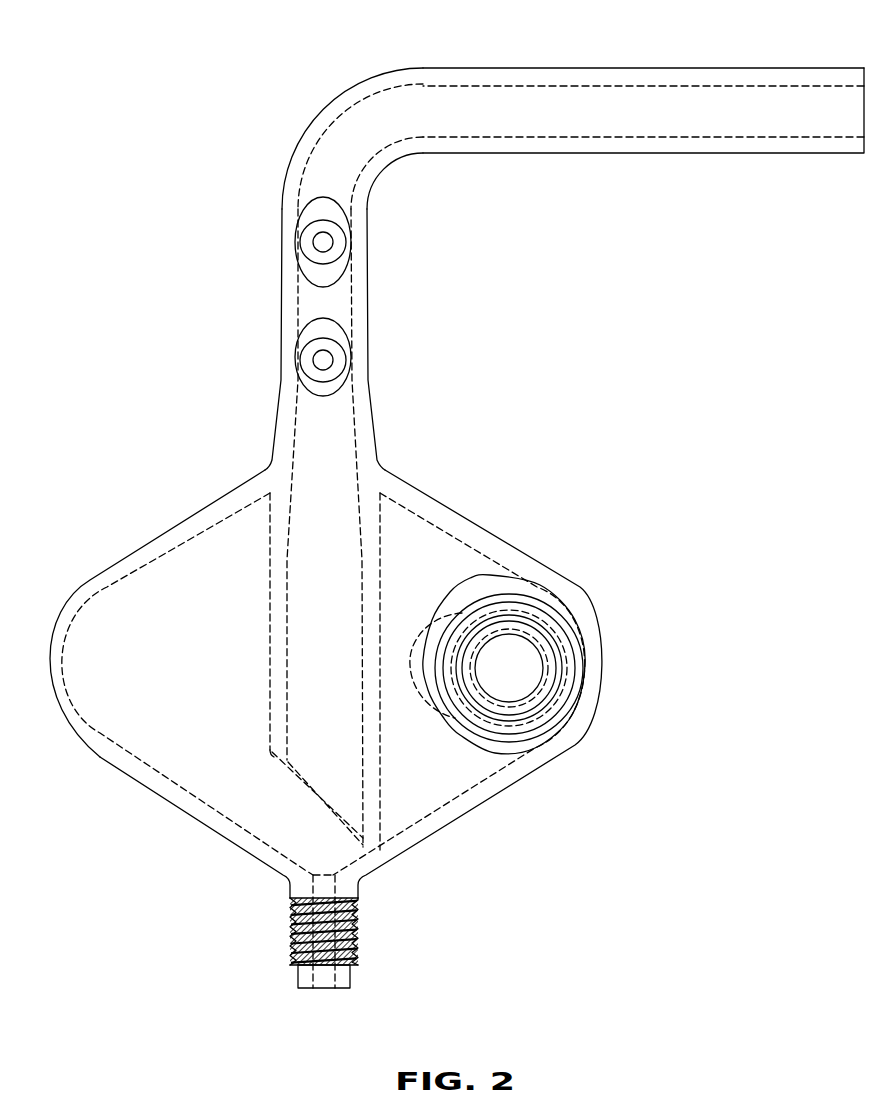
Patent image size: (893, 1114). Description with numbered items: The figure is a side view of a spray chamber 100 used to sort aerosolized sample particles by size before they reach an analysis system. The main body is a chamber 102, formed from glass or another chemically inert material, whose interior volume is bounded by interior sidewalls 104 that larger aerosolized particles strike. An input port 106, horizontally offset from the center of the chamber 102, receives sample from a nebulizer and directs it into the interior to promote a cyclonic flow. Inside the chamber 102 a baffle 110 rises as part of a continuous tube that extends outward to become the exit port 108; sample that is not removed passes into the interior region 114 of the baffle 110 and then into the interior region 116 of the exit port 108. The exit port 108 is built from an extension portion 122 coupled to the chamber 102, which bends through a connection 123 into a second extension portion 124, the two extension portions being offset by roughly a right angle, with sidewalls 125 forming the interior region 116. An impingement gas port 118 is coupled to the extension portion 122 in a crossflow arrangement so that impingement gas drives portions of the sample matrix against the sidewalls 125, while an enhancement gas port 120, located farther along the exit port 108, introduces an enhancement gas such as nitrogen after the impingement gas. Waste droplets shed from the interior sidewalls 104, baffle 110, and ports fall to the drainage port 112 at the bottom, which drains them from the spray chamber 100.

The spray chamber 100 is at (157, 172).
The chamber 102 is at (465, 535).
The interior sidewalls 104 is at (212, 813).
The input port 106 is at (502, 707).
The exit port 108 is at (653, 78).
The baffle 110 is at (287, 740).
The drainage port 112 is at (343, 975).
The interior region of the baffle 114 is at (332, 778).
The interior region of the exit port 116 is at (365, 125).
The impingement gas port 118 is at (338, 363).
The enhancement gas port 120 is at (338, 237).
The extension portion 122 is at (280, 298).
The connection 123 is at (308, 128).
The extension portion 124 is at (528, 69).
The sidewalls of the exit port 125 is at (350, 287).